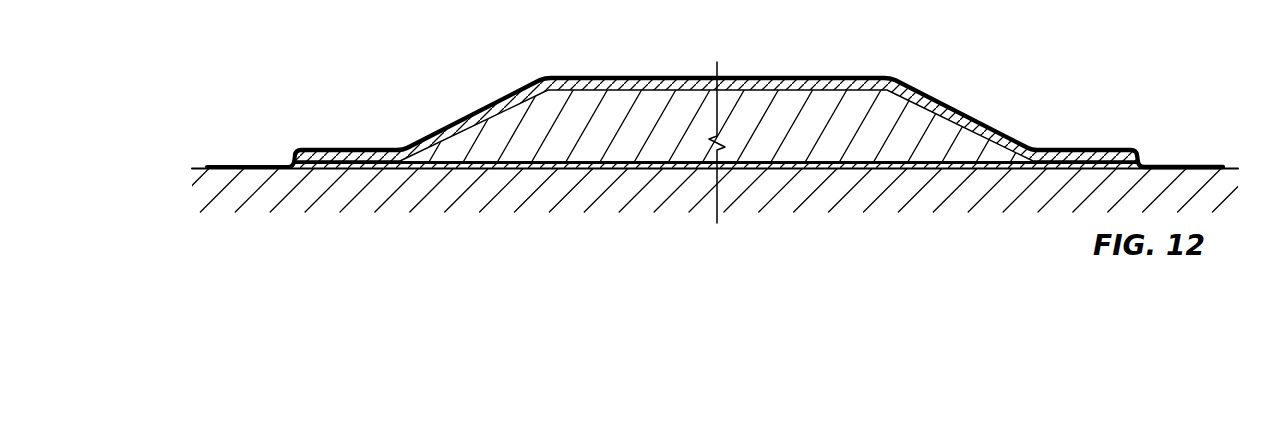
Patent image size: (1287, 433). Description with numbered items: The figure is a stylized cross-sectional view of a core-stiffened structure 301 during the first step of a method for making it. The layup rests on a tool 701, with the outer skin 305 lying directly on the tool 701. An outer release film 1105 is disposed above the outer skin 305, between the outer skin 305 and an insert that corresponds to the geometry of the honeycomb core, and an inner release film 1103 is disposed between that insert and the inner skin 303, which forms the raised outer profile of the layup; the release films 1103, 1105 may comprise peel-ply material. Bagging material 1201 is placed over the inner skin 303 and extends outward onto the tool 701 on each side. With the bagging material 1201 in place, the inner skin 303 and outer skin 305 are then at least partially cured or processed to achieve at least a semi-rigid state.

The core-stiffened structure 301 is at (926, 77).
The inner skin 303 is at (587, 78).
The outer skin 305 is at (837, 165).
The tool 701 is at (953, 198).
The inner release film 1103 is at (777, 78).
The outer release film 1105 is at (473, 164).
The bagging material 1201 is at (290, 160).